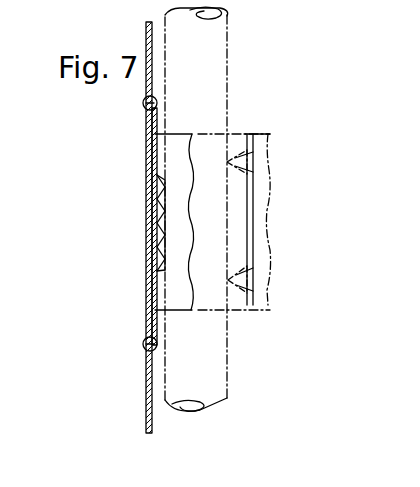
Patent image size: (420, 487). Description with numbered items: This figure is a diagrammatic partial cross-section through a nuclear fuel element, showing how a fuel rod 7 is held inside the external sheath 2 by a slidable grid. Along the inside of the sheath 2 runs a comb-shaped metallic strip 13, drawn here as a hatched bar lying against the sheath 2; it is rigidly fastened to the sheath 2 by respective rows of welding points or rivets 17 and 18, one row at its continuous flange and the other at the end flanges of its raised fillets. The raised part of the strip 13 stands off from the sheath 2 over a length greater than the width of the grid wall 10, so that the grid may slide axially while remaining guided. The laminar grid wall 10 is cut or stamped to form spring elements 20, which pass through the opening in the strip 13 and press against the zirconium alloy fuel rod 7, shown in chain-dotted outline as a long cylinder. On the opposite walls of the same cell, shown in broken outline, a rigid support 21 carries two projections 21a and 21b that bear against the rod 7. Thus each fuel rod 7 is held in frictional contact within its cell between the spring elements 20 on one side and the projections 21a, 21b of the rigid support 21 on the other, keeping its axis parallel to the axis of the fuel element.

The sheath 2 is at (145, 404).
The fuel rod 7 is at (232, 358).
The grid wall 10 is at (150, 250).
The metallic strip 13 is at (158, 318).
The rivets 17 is at (143, 103).
The rivets 18 is at (143, 344).
The spring element 20 is at (165, 224).
The rigid support 21 is at (252, 220).
The projection 21a is at (262, 160).
The projection 21b is at (262, 283).